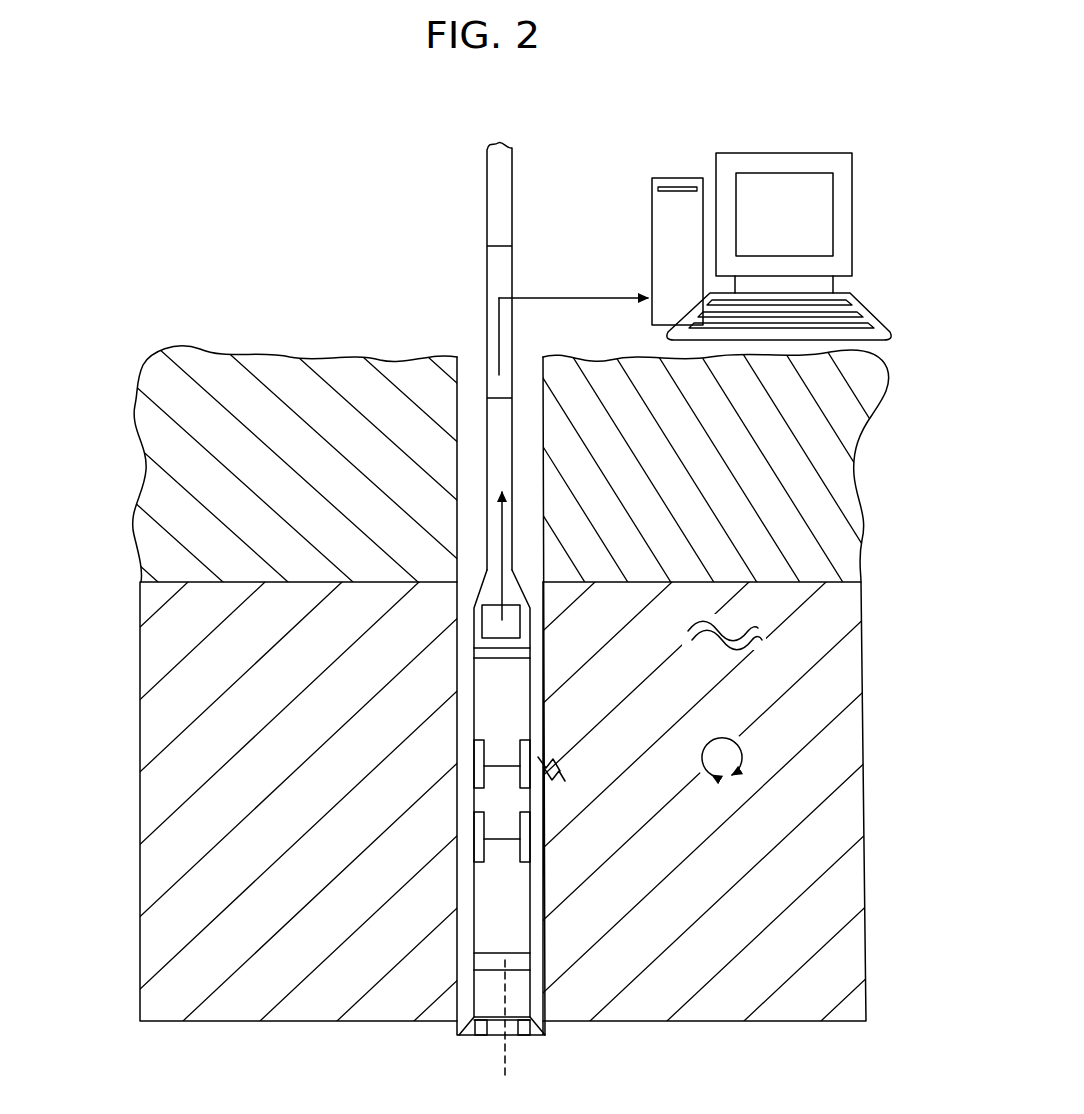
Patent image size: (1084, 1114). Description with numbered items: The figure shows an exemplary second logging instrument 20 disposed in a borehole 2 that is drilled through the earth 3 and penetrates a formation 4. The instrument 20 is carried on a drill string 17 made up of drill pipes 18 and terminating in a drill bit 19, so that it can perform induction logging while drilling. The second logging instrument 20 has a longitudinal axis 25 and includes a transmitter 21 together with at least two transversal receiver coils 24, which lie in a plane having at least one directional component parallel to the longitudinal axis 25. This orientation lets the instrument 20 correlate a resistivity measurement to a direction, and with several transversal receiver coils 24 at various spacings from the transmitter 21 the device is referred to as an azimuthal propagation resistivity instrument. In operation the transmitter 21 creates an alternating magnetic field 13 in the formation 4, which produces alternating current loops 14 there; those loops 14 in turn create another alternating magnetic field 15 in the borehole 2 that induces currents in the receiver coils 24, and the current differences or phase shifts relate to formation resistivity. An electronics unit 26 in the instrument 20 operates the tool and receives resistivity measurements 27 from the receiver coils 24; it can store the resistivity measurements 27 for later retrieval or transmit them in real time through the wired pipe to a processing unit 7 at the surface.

The borehole 2 is at (473, 380).
The earth 3 is at (300, 370).
The formation 4 is at (195, 641).
The processing unit 7 is at (652, 196).
The alternating magnetic field 13 is at (735, 632).
The alternating current loops 14 is at (745, 758).
The alternating magnetic field 15 is at (553, 760).
The drill string 17 is at (459, 287).
The drill pipes 18 is at (486, 210).
The drill bit 19 is at (480, 1027).
The second logging instrument 20 is at (466, 580).
The transmitter 21 is at (480, 658).
The transversal receiver coils 24 is at (482, 767).
The longitudinal axis 25 is at (508, 1062).
The electronics unit 26 is at (503, 622).
The resistivity measurements 27 is at (503, 511).